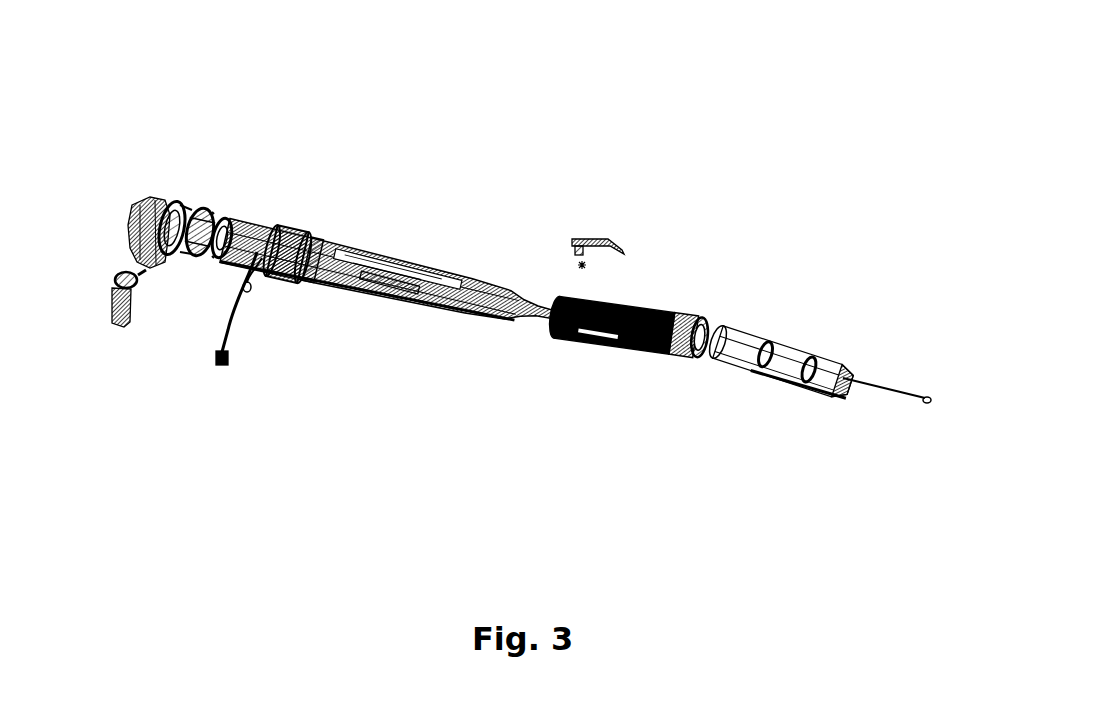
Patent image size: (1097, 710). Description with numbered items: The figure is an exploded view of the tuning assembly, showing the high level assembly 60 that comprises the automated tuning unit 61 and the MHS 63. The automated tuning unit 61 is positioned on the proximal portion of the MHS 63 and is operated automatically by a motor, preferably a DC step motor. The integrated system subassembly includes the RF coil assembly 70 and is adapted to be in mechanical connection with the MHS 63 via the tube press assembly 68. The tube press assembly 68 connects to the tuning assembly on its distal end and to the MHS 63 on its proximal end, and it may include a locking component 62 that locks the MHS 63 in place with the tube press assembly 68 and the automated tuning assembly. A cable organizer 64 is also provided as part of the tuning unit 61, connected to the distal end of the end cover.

The high level assembly 60 is at (740, 147).
The automated tuning unit 61 is at (284, 252).
The locking component 62 is at (607, 240).
The MHS 63 is at (872, 391).
The cable organizer 64 is at (105, 305).
The tube press assembly 68 is at (442, 310).
The RF coil assembly 70 is at (612, 358).